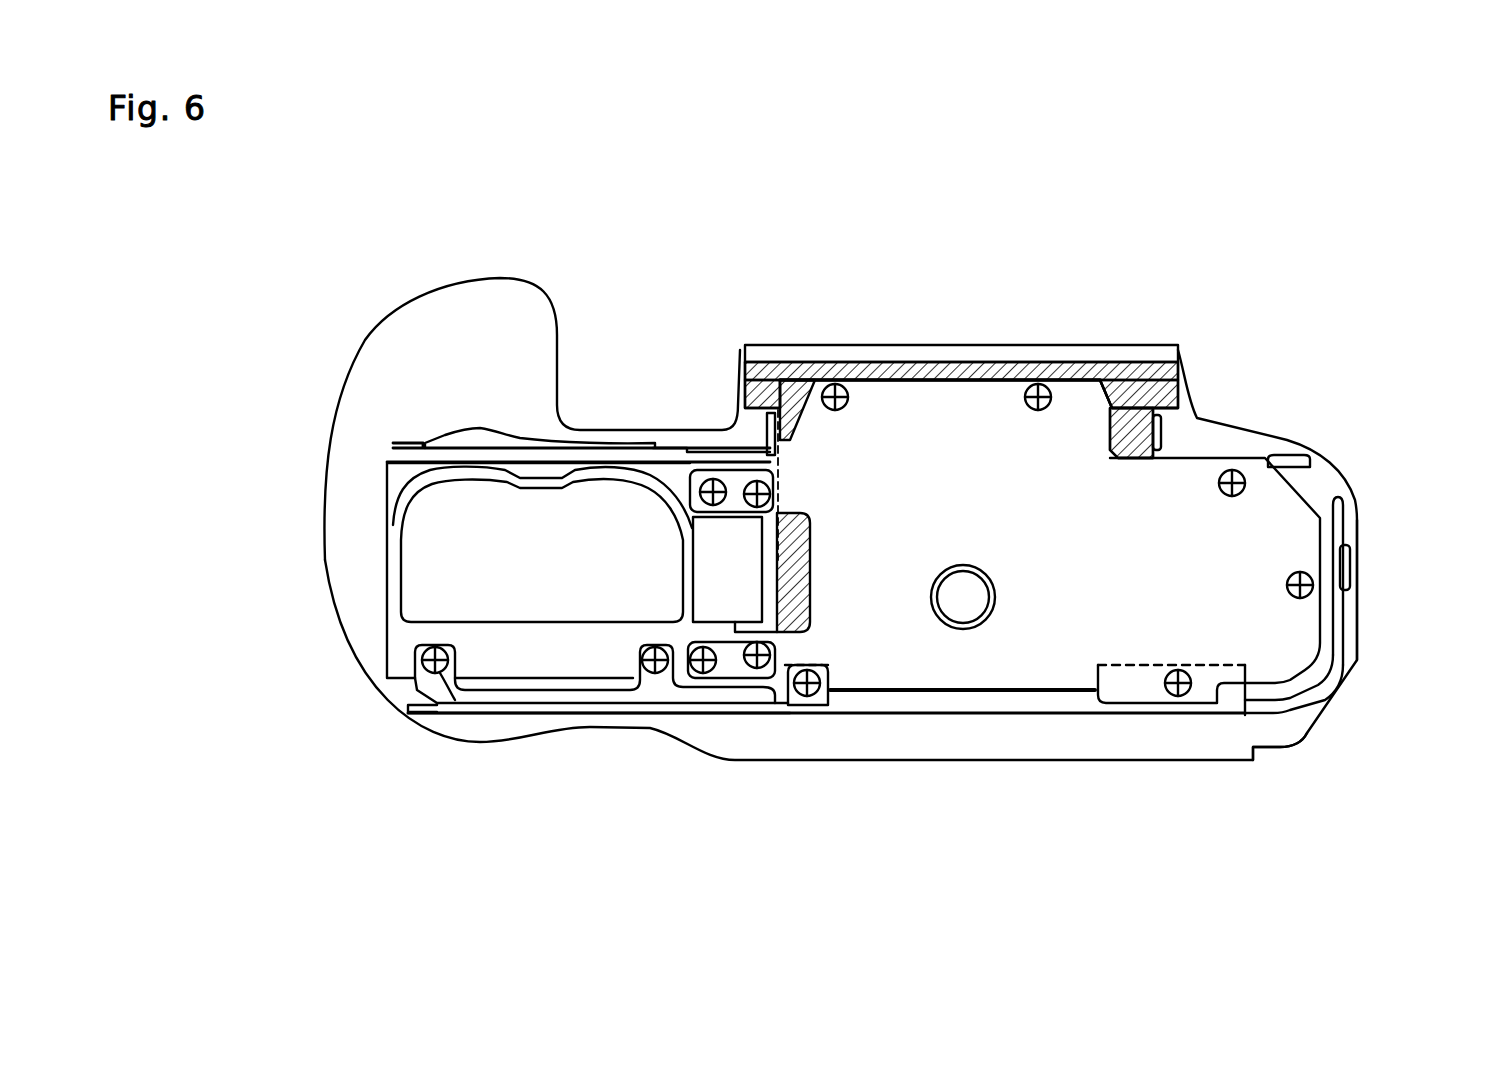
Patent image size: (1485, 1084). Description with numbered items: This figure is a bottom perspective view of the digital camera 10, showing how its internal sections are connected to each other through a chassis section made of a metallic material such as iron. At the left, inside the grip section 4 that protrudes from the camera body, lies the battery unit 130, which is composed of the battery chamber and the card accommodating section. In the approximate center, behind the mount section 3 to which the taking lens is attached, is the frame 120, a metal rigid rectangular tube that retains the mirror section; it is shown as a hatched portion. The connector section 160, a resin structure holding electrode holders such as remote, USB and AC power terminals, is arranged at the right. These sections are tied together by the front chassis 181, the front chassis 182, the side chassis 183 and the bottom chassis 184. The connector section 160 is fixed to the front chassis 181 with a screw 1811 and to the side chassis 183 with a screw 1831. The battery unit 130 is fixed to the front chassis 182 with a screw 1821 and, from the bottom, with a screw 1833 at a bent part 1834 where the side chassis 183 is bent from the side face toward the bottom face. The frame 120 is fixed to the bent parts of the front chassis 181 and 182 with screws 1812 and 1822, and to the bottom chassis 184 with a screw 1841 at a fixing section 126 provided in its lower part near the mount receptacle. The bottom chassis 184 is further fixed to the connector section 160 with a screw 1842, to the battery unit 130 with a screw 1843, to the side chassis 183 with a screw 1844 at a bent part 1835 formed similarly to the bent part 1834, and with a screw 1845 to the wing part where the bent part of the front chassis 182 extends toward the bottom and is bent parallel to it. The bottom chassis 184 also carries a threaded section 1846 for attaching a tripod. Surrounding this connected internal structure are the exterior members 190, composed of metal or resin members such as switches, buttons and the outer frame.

The grip section 4 is at (397, 342).
The mount section 3 is at (1038, 355).
The digital camera 10 is at (1378, 618).
The frame 120 is at (1126, 385).
The fixing section 126 is at (808, 400).
The battery unit 130 is at (410, 588).
The connector section 160 is at (1312, 492).
The front chassis 181 is at (1183, 382).
The screw 1811 is at (1298, 452).
The screw 1812 is at (1160, 438).
The front chassis 182 is at (767, 437).
The screw 1821 is at (492, 420).
The screw 1822 is at (767, 450).
The side chassis 183 is at (1267, 717).
The screw 1831 is at (1355, 567).
The screw 1833 is at (443, 677).
The bent part 1834 is at (660, 697).
The bent part 1835 is at (1020, 705).
The bottom chassis 184 is at (946, 657).
The screw 1841 is at (965, 362).
The screw 1842 is at (1300, 585).
The screw 1843 is at (690, 500).
The screw 1844 is at (820, 668).
The screw 1845 is at (777, 500).
The threaded section for tripod 1846 is at (967, 565).
The exterior members 190 is at (1327, 697).